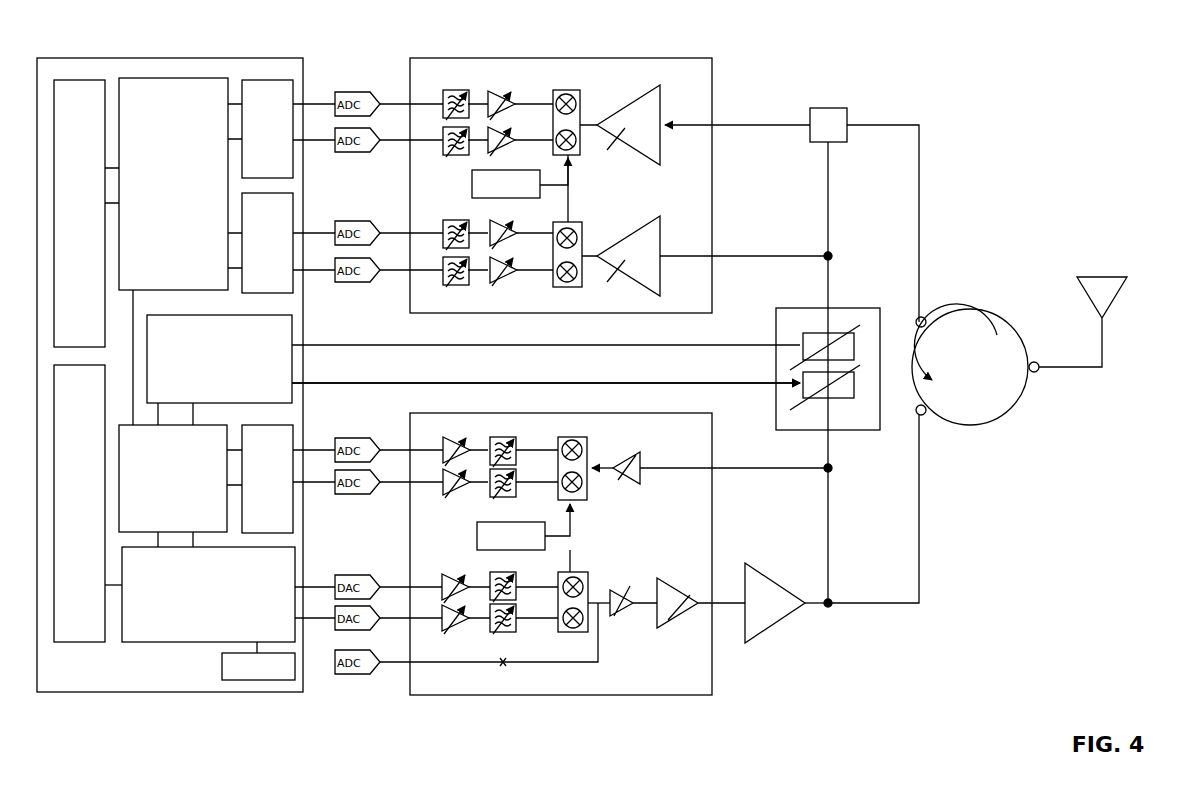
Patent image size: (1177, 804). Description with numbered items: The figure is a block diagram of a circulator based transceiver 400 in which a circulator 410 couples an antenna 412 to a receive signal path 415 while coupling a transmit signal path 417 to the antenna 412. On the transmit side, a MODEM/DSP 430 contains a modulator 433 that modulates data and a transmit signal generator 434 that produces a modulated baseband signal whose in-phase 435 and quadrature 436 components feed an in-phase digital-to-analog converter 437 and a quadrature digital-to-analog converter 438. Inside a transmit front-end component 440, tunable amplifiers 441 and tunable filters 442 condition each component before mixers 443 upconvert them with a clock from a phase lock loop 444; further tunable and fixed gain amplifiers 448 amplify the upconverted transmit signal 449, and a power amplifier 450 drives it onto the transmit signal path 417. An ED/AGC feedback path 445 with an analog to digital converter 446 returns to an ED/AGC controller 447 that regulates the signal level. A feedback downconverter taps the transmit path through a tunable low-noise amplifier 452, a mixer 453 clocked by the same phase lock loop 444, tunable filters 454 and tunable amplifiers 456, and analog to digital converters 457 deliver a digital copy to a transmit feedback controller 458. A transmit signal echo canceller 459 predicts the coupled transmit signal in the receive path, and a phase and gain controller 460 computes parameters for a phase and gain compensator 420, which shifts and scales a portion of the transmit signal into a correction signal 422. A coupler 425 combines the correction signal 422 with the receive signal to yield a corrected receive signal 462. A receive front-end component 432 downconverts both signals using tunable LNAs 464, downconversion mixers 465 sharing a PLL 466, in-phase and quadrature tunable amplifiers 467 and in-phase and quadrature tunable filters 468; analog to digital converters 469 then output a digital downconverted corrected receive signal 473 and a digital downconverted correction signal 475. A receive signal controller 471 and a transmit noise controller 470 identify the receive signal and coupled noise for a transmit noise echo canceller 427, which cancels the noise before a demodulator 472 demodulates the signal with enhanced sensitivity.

The circulator based transceiver 400 is at (1000, 45).
The circulator 410 is at (1020, 413).
The antenna 412 is at (1105, 268).
The receive signal path 415 is at (924, 190).
The transmit signal path 417 is at (926, 520).
The phase and gain compensator 420 is at (806, 307).
The correction signal 422 is at (832, 190).
The coupler 425 is at (846, 108).
The transmit noise echo canceller 427 is at (180, 75).
The MODEM/DSP 430 is at (100, 695).
The receive front-end component 432 is at (630, 56).
The modulator 433 is at (60, 646).
The transmit signal generator 434 is at (203, 695).
The in-phase component 435 is at (314, 582).
The quadrature component 436 is at (318, 622).
The in-phase digital-to-analog converter 437 is at (350, 573).
The quadrature digital-to-analog converter 438 is at (360, 630).
The transmit front-end component 440 is at (560, 698).
The tunable amplifiers 441 is at (435, 577).
The tunable filters 442 is at (500, 565).
The mixers 443 is at (580, 640).
The phase lock loop 444 is at (472, 530).
The ED/AGC feedback path 445 is at (390, 668).
The analog to digital converter 446 is at (340, 680).
The ED/AGC controller 447 is at (257, 683).
The attenuator and driver amplifier 448 is at (626, 622).
The upconverted transmit signal 449 is at (722, 610).
The power amplifier 450 is at (778, 630).
The tunable low-noise amplifier 452 is at (628, 440).
The mixer 453 is at (574, 432).
The tunable filters 454 is at (500, 430).
The tunable amplifiers 456 is at (447, 432).
The analog to digital converters 457 is at (352, 440).
The transmit feedback controller 458 is at (298, 506).
The transmit signal echo canceller 459 is at (215, 425).
The phase and gain controller 460 is at (298, 336).
The corrected receive signal 462 is at (738, 122).
The tunable LNAs 464 is at (664, 80).
The downconversion mixers 465 is at (580, 218).
The PLL 466 is at (468, 185).
The in-phase and quadrature tunable amplifiers 467 is at (502, 88).
The in-phase and quadrature tunable filters 468 is at (455, 86).
The analog to digital converters 469 is at (352, 88).
The transmit noise controller 470 is at (304, 225).
The receive signal controller 471 is at (272, 75).
The demodulator 472 is at (85, 75).
The digital downconverted corrected receive signal 473 is at (320, 132).
The digital downconverted correction signal 475 is at (310, 242).